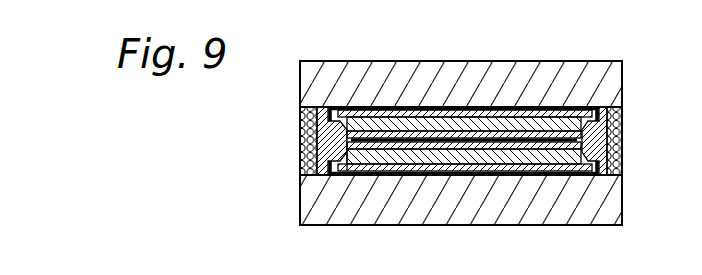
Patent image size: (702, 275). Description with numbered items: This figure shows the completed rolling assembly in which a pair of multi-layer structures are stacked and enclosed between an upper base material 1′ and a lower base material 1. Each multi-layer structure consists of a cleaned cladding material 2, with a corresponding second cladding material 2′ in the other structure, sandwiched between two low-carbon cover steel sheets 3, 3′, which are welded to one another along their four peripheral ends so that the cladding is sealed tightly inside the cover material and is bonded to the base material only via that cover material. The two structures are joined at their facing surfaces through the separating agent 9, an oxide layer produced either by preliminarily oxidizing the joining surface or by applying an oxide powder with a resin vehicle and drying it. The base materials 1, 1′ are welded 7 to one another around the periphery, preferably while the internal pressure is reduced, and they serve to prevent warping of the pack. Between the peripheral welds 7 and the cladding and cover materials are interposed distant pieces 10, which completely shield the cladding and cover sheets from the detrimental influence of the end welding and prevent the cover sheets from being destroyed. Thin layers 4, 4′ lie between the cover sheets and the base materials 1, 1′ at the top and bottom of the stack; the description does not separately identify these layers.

The base material 1′ is at (518, 73).
The base material 1 is at (558, 210).
The upper liquid crystal layer 2′ is at (425, 125).
The cladding material 2 is at (462, 158).
The cover steel sheet 3 is at (364, 114).
The cover steel sheet 3′ is at (467, 113).
The upper electrode 4′ is at (331, 107).
The lower electrode 4 is at (330, 176).
The weld 7 is at (303, 133).
The oxide layer (separating agent) 9 is at (351, 166).
The distant piece 10 is at (310, 164).